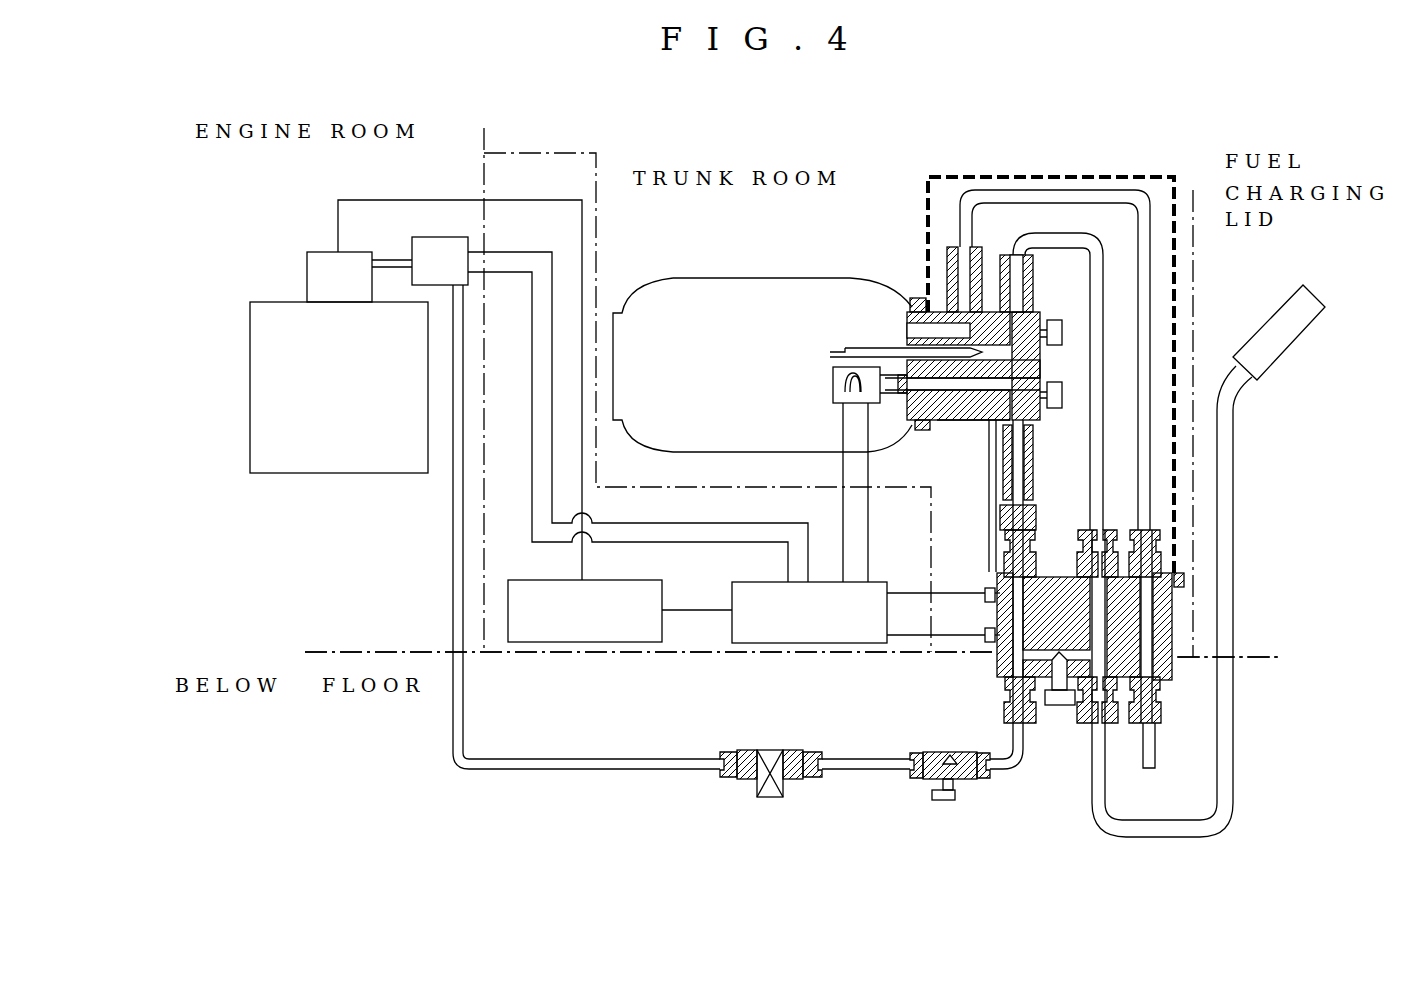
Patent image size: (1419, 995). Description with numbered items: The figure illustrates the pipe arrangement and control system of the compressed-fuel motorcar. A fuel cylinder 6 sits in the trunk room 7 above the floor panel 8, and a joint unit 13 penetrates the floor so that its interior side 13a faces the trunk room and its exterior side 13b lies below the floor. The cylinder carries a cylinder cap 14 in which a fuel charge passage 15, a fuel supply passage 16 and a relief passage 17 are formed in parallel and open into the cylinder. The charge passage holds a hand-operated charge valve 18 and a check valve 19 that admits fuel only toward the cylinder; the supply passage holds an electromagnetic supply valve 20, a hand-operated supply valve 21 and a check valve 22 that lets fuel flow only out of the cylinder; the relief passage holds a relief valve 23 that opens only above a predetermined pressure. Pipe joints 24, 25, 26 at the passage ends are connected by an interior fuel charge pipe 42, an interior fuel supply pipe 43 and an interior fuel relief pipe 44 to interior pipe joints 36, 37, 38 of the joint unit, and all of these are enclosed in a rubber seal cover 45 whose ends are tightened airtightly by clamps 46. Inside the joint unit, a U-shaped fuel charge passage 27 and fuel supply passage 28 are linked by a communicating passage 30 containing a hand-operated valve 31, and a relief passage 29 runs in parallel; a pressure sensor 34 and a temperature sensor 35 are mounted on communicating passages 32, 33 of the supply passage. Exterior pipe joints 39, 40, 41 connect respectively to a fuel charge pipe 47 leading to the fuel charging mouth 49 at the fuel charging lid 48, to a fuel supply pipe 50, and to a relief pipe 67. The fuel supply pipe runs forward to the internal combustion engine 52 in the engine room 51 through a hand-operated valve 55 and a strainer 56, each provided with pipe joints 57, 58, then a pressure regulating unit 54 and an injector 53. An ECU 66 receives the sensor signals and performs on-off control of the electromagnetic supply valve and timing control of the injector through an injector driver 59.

The fuel cylinder 6 is at (790, 278).
The trunk room 7 is at (733, 232).
The floor panel 8 is at (348, 650).
The joint unit 13 is at (1170, 644).
The interior side of the joint unit 13a is at (1163, 620).
The exterior side of the joint unit 13b is at (1175, 675).
The cylinder cap 14 is at (950, 422).
The fuel charge passage 15 is at (1015, 355).
The fuel supply passage 16 is at (920, 432).
The relief passage 17 is at (905, 325).
The hand-operated charge valve 18 is at (1053, 320).
The check valve 19 is at (905, 348).
The electromagnetic supply valve 20 is at (833, 383).
The hand-operated supply valve 21 is at (1053, 408).
The check valve 22 is at (1033, 445).
The relief valve 23 is at (976, 247).
The pipe joint 24 is at (1012, 258).
The pipe joint 25 is at (1037, 520).
The pipe joint 26 is at (952, 245).
The fuel charge passage 27 is at (1100, 605).
The fuel supply passage 28 is at (995, 597).
The relief passage 29 is at (1160, 637).
The pipe 30 is at (1040, 580).
The hand-operated valve 31 is at (1060, 705).
The communicating passage 32 is at (992, 568).
The communicating passage 33 is at (1000, 676).
The pressure sensor 34 is at (985, 592).
The temperature sensor 35 is at (975, 638).
The interior pipe joint 36 is at (1108, 535).
The interior pipe joint 37 is at (1000, 540).
The interior pipe joint 38 is at (1165, 540).
The exterior pipe joint 39 is at (1085, 725).
The exterior pipe joint 40 is at (1010, 722).
The exterior pipe joint 41 is at (1163, 712).
The interior fuel charge pipe 42 is at (1100, 365).
The interior fuel supply pipe 43 is at (1000, 515).
The interior fuel relief pipe 44 is at (1134, 200).
The rubber seal cover 45 is at (1055, 177).
The clamp 46 is at (915, 298).
The fuel charge pipe 47 is at (1233, 770).
The fuel charging lid 48 is at (1208, 291).
The fuel charging mouth 49 is at (1297, 330).
The fuel supply pipe 50 is at (623, 758).
The engine room 51 is at (290, 205).
The internal combustion engine 52 is at (345, 462).
The injector 53 is at (307, 268).
The pressure regulating unit 54 is at (425, 242).
The hand-operated valve 55 is at (958, 800).
The strainer 56 is at (790, 782).
The pipe joint 57 is at (912, 780).
The pipe joint 58 is at (722, 779).
The injector driver 59 is at (648, 636).
The ECU 66 is at (780, 632).
The relief pipe 67 is at (1155, 757).